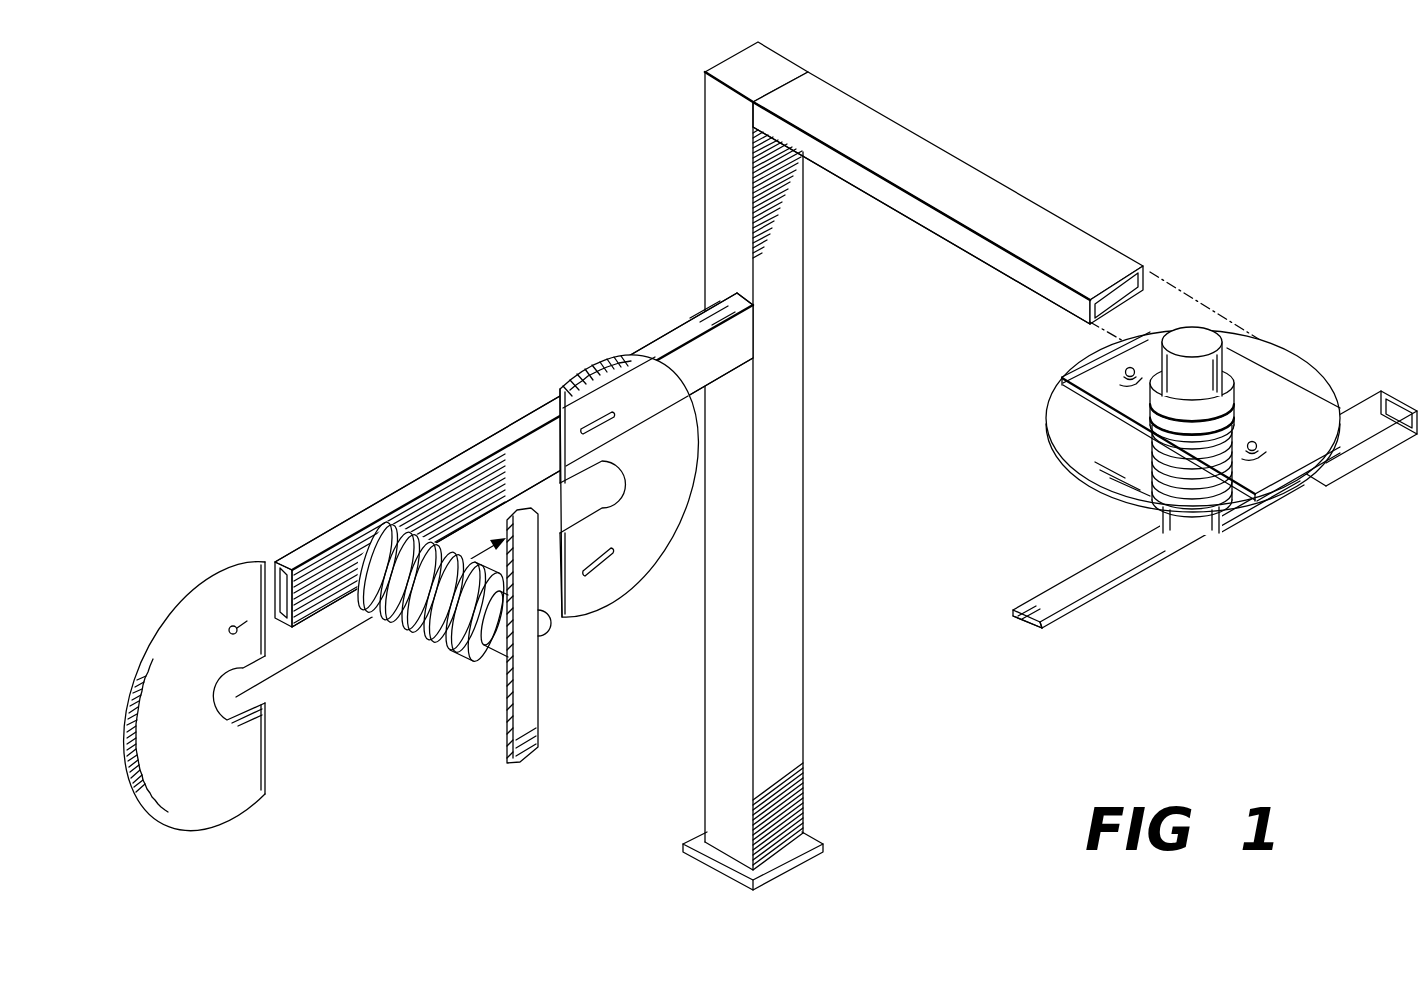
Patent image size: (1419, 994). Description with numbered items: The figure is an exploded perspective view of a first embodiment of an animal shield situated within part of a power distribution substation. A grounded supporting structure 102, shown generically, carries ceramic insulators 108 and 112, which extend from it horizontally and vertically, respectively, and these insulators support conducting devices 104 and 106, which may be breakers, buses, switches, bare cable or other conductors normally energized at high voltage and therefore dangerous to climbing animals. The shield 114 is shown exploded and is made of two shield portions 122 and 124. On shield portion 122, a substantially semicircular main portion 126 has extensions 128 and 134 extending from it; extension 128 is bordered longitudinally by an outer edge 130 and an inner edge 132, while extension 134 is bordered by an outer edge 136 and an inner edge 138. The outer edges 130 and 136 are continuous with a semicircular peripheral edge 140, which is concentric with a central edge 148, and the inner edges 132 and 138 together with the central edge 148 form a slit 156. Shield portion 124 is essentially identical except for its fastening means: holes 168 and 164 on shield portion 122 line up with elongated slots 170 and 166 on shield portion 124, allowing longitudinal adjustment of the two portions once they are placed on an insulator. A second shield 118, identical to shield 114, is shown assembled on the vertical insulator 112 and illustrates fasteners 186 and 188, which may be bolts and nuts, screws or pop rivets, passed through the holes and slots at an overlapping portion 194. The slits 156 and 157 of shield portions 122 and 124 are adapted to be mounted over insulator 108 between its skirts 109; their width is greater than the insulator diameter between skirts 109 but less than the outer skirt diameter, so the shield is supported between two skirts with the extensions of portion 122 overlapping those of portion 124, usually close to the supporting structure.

The grounded supporting structure 102 is at (700, 134).
The conducting device 104 is at (536, 727).
The conducting device 106 is at (1070, 580).
The ceramic insulator 108 is at (791, 565).
The skirts 109 is at (410, 612).
The ceramic insulator 112 is at (1209, 322).
The shield 114 is at (405, 418).
The shield 118 is at (1187, 401).
The shield portion 122 is at (222, 681).
The shield portion 124 is at (605, 451).
The main portion 126 is at (178, 800).
The extension 128 is at (255, 765).
The outer edge 130 is at (252, 785).
The inner edge 132 is at (268, 704).
The extension 134 is at (255, 590).
The outer edge 136 is at (258, 562).
The inner edge 138 is at (247, 673).
The peripheral edge 140 is at (137, 805).
The central edge 148 is at (218, 709).
The slit 156 is at (290, 662).
The slit 157 is at (563, 492).
The hole 164 is at (230, 765).
The elongated slot 166 is at (606, 537).
The hole 168 is at (232, 608).
The elongated slot 170 is at (606, 416).
The fastener 186 is at (1128, 366).
The fastener 188 is at (1254, 438).
The overlapping portion 194 is at (1270, 492).